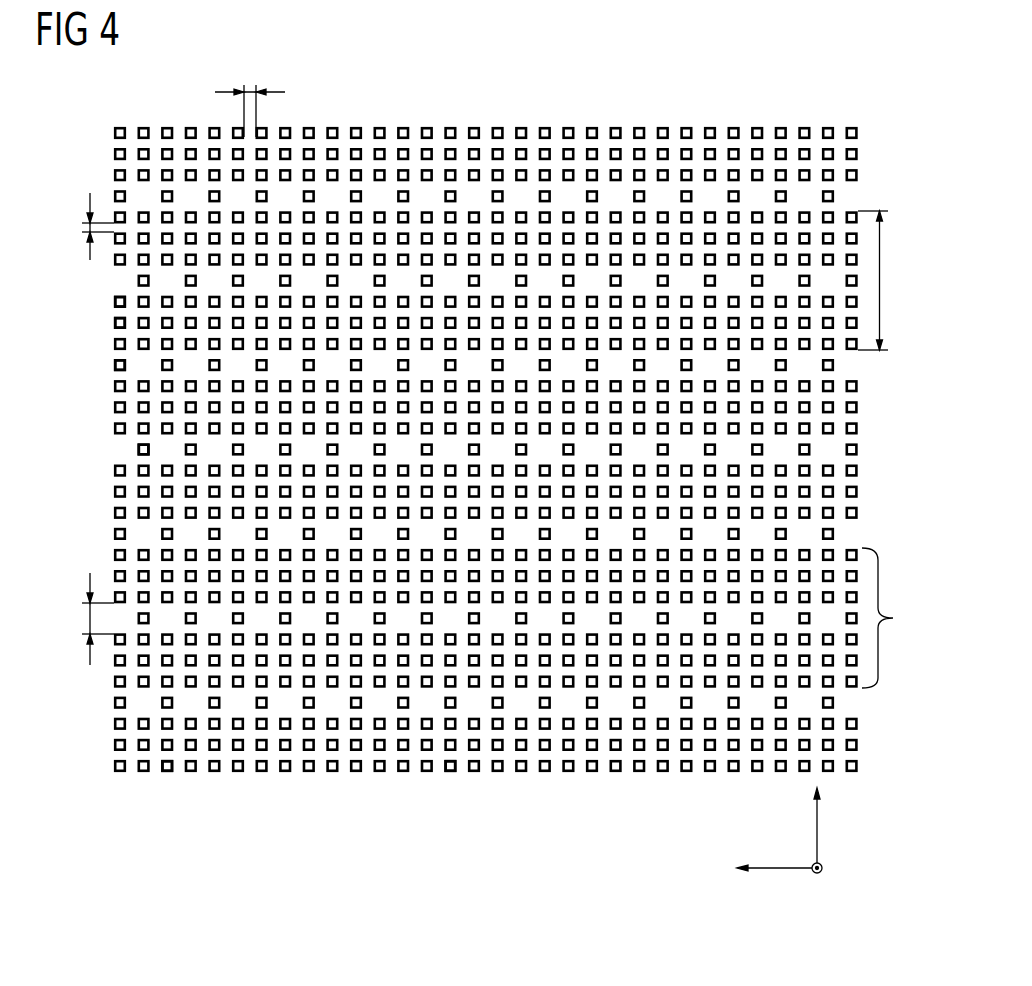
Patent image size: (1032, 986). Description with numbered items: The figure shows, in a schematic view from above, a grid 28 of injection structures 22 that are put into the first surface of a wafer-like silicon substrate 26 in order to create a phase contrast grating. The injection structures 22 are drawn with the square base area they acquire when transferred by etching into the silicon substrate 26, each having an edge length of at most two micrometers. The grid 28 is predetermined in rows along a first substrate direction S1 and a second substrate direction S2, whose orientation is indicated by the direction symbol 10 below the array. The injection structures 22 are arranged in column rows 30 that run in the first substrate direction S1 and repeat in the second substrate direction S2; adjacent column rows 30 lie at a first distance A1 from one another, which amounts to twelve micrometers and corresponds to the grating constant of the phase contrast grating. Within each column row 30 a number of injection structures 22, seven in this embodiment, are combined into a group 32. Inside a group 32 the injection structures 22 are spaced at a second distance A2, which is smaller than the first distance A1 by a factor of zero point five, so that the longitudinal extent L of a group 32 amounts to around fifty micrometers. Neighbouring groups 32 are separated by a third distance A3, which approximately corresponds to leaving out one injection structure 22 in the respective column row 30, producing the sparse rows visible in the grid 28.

The grid 28 is at (368, 104).
The injection structures 22 is at (114, 302).
The silicon substrate 26 is at (138, 441).
The column rows 30 is at (167, 796).
The group 32 is at (892, 618).
The origin of coordinate system 10 is at (823, 869).
The first distance A1 is at (247, 88).
The second distance A2 is at (89, 226).
The third distance A3 is at (89, 620).
The longitudinal extent L is at (878, 240).
The first substrate direction S1 is at (818, 832).
The second substrate direction S2 is at (772, 870).